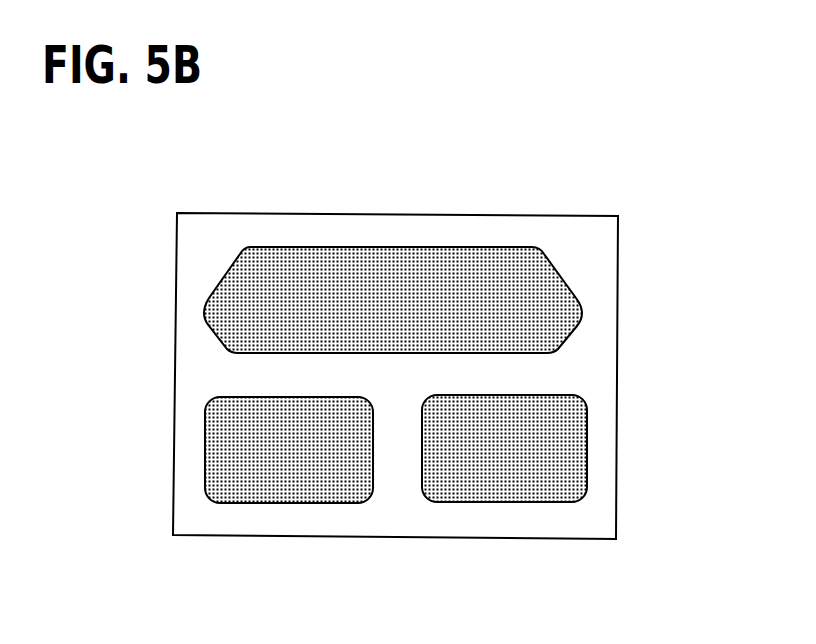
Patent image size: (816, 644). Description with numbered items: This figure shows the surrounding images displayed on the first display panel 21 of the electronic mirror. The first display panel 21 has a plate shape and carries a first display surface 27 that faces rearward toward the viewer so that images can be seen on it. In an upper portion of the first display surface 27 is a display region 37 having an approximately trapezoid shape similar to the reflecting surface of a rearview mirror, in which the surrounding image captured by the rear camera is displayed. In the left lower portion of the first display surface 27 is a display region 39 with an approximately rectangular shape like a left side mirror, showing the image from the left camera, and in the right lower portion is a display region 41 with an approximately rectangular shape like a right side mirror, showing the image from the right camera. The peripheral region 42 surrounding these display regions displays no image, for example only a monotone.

The first display panel 21 is at (442, 357).
The first display surface 27 is at (533, 228).
The display region 37 is at (475, 267).
The display region 39 is at (260, 483).
The display region 41 is at (562, 447).
The peripheral region 42 is at (438, 253).